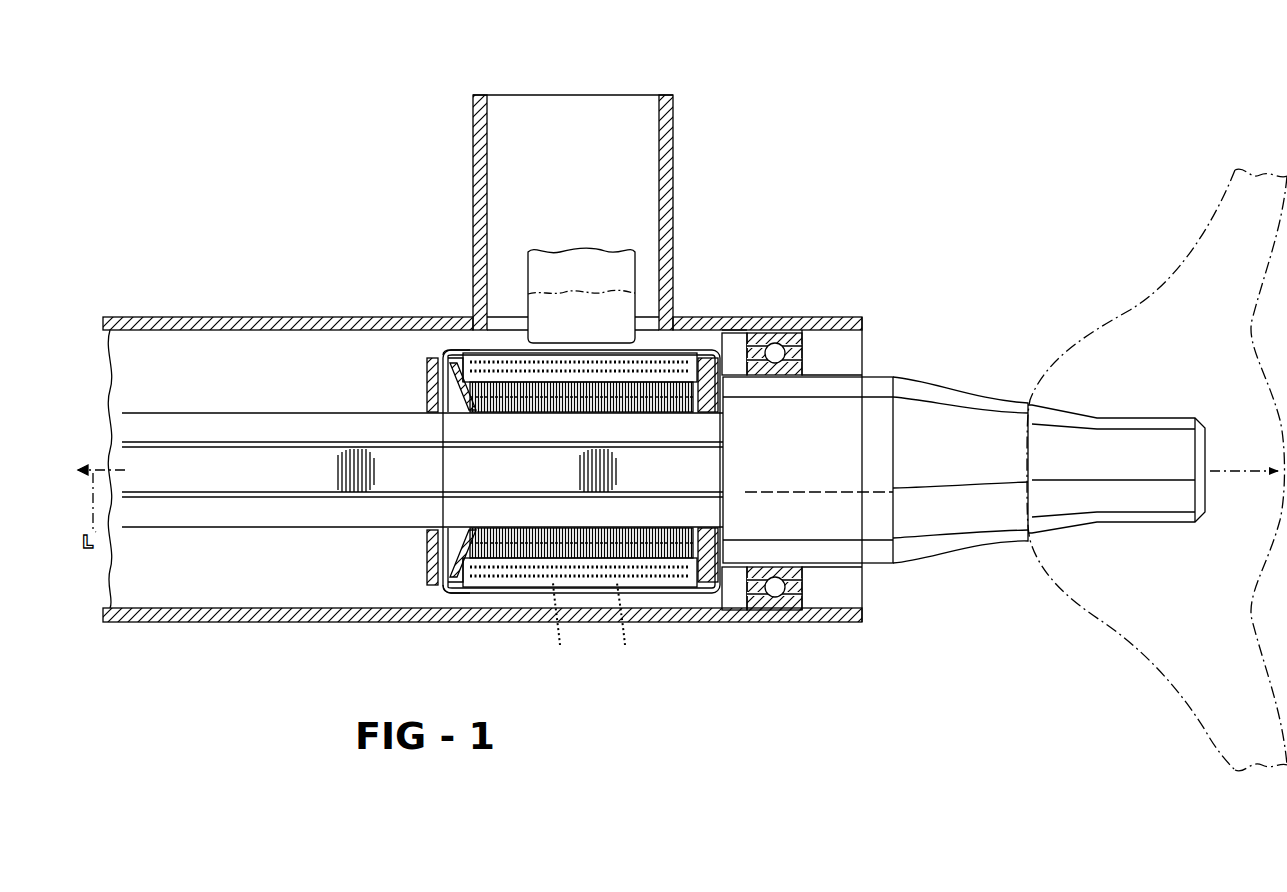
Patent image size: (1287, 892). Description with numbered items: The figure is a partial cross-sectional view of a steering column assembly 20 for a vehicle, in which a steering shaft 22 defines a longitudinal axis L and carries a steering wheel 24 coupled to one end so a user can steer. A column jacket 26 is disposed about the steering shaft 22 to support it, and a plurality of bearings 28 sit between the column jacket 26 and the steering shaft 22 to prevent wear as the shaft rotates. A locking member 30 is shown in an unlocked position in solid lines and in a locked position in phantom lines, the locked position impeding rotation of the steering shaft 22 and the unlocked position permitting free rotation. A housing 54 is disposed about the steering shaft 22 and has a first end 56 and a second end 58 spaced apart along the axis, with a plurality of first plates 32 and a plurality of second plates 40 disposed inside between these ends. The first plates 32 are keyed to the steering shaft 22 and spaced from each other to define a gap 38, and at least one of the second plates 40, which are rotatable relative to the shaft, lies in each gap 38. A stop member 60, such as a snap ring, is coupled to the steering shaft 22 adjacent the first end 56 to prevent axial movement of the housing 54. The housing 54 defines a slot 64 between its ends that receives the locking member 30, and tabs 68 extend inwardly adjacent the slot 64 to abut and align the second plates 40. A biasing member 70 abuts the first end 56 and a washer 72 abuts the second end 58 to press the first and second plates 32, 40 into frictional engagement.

The steering column assembly 20 is at (915, 163).
The steering shaft 22 is at (323, 513).
The steering wheel 24 is at (1095, 625).
The column jacket 26 is at (333, 617).
The bearings 28 is at (798, 323).
The locking member 30 is at (637, 262).
The first plates 32 is at (445, 405).
The gap 38 is at (594, 628).
The second plates 40 is at (458, 534).
The housing 54 is at (718, 356).
The first end 56 is at (445, 575).
The second end 58 is at (718, 577).
The stop member 60 is at (427, 372).
The slot 64 is at (462, 357).
The tabs 68 is at (673, 355).
The biasing member 70 is at (467, 573).
The washer 72 is at (705, 357).